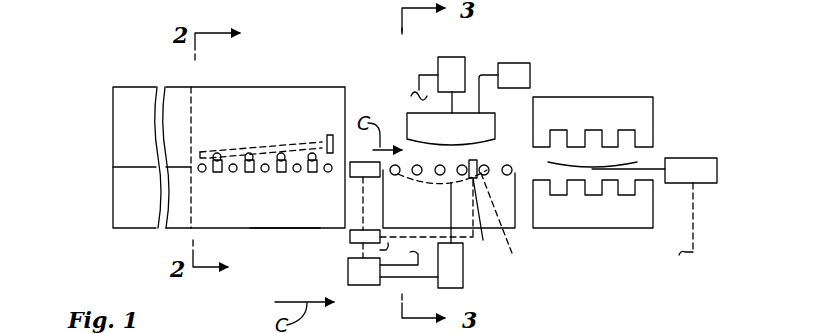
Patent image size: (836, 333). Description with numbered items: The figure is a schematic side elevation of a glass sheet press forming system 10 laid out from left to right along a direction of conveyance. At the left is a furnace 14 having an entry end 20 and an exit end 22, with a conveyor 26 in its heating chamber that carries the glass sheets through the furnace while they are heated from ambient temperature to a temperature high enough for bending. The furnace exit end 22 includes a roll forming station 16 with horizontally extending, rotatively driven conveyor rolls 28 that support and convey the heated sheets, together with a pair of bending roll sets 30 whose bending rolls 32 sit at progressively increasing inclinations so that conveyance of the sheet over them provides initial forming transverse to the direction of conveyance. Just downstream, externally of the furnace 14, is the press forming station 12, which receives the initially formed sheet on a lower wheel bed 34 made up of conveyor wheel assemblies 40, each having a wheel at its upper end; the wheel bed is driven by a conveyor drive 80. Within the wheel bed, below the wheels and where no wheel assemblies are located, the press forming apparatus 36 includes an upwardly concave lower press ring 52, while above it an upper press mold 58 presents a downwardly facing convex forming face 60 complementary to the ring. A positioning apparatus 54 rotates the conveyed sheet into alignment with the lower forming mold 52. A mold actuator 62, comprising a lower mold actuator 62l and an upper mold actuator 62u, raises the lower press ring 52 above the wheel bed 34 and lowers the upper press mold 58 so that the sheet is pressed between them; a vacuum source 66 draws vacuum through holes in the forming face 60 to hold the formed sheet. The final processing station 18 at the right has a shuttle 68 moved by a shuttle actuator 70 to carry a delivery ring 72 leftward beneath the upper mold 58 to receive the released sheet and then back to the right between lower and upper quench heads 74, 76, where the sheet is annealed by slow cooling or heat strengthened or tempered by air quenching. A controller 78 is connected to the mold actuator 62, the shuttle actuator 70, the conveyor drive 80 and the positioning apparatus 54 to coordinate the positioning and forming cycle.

The glass sheet forming system 10 is at (541, 51).
The press forming station 12 is at (424, 60).
The furnace 14 is at (143, 60).
The roll forming station 16 is at (255, 157).
The final processing station 18 is at (614, 80).
The entry end 20 is at (132, 88).
The exit end 22 is at (282, 230).
The conveyor 26 is at (135, 167).
The conveyor rolls 28 is at (232, 173).
The bending roll sets 30 is at (261, 140).
The bending rolls 32 is at (248, 152).
The lower wheel bed 34 is at (524, 165).
The press forming apparatus 36 is at (518, 236).
The conveyor wheel assemblies 40 is at (396, 176).
The lower press ring 52 is at (513, 219).
The positioning apparatus 54 is at (483, 213).
The upper press mold 58 is at (405, 125).
The forming face 60 is at (483, 147).
The mold actuator 62 is at (334, 270).
The upper mold actuator 62u is at (450, 60).
The lower mold actuator 62l is at (457, 272).
The vacuum source 66 is at (513, 63).
The shuttle 68 is at (652, 158).
The shuttle actuator 70 is at (705, 175).
The delivery ring 72 is at (627, 163).
The lower quench head 74 is at (615, 218).
The upper quench head 76 is at (628, 105).
The controller 78 is at (350, 237).
The conveyor drive 80 is at (330, 135).